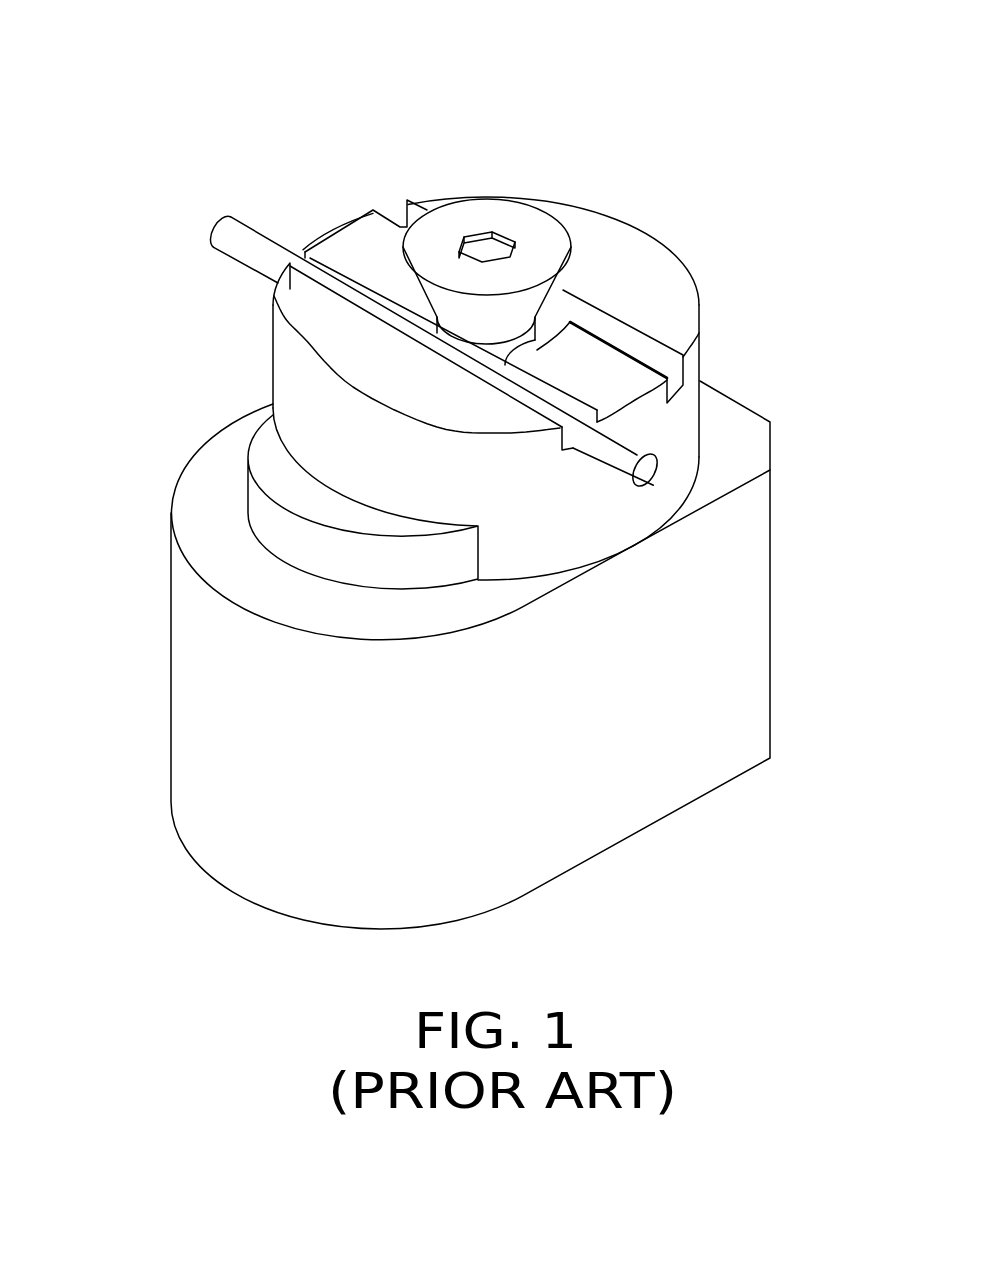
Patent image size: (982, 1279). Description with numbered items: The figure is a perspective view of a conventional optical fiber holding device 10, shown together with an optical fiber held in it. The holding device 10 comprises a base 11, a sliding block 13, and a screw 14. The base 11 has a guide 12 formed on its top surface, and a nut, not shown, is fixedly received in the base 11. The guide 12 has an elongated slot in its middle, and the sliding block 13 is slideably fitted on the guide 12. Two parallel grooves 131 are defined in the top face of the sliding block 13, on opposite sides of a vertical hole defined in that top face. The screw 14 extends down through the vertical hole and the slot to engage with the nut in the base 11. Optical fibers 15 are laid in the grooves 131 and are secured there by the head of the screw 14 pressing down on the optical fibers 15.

The optical fiber holding device 10 is at (698, 212).
The base 11 is at (685, 608).
The guide 12 is at (297, 538).
The sliding block 13 is at (680, 425).
The grooves 131 is at (347, 277).
The screw 14 is at (525, 223).
The optical fibers 15 is at (250, 247).